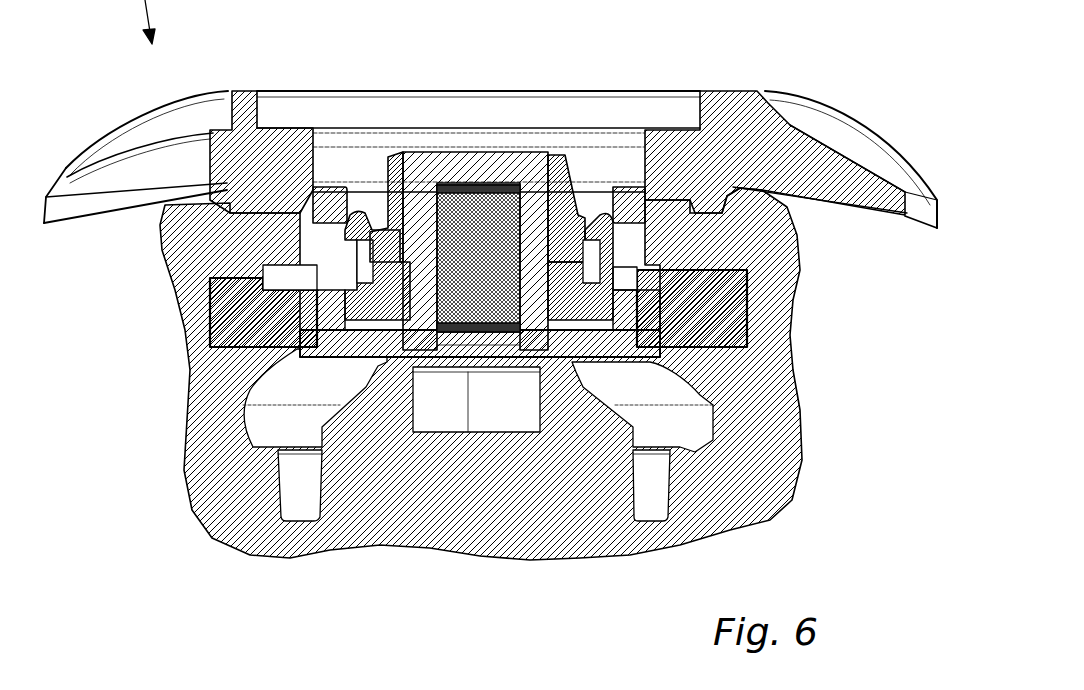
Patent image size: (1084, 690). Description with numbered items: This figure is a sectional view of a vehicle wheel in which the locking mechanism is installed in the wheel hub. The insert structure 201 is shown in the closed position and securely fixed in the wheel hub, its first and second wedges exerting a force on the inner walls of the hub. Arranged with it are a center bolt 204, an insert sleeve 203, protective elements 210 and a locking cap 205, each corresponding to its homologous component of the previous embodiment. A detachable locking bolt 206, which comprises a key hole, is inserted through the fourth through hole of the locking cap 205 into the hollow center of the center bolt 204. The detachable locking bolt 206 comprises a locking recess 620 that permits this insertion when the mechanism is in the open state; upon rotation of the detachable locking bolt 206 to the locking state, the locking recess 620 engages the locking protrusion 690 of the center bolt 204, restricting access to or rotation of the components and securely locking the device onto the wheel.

The insert structure 201 is at (321, 333).
The insert sleeve 203 is at (355, 228).
The center bolt 204 is at (397, 327).
The locking cap 205 is at (388, 207).
The detachable locking bolt 206 is at (547, 207).
The protective elements 210 is at (127, 206).
The locking recess 620 is at (483, 340).
The locking protrusion 690 is at (436, 180).